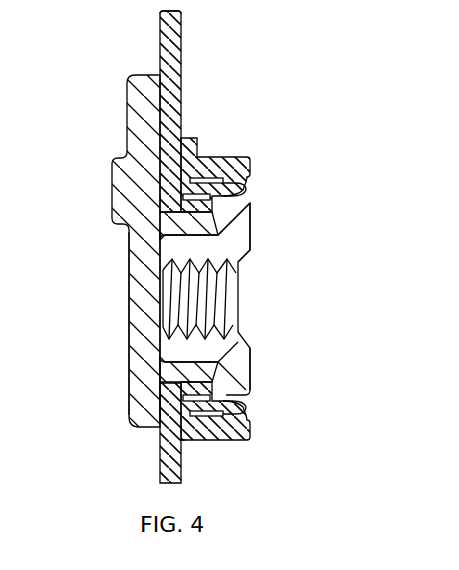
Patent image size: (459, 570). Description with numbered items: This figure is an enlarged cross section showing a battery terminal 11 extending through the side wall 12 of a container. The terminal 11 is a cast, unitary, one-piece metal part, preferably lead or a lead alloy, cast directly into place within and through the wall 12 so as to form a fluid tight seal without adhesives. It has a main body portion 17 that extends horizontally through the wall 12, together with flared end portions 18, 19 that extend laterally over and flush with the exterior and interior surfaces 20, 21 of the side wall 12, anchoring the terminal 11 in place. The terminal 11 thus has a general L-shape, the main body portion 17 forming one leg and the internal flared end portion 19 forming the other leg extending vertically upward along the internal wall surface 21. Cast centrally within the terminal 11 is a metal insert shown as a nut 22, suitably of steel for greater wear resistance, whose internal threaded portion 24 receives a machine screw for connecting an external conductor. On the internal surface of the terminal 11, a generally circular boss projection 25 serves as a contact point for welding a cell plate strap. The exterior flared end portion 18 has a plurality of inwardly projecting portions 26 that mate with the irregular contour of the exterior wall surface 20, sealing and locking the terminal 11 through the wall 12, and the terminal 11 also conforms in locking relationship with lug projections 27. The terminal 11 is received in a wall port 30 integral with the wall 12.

The terminal 11 is at (244, 351).
The side wall 12 is at (178, 44).
The main body portion 17 is at (217, 228).
The flared end portion 18 is at (246, 383).
The flared end portion 19 is at (145, 220).
The exterior surface 20 is at (183, 118).
The interior surface 21 is at (160, 45).
The nut 22 is at (218, 247).
The internal threaded portion 24 is at (232, 300).
The boss projection 25 is at (113, 190).
The inwardly projecting portions 26 is at (207, 190).
The lug projections 27 is at (245, 179).
The wall port 30 is at (236, 461).